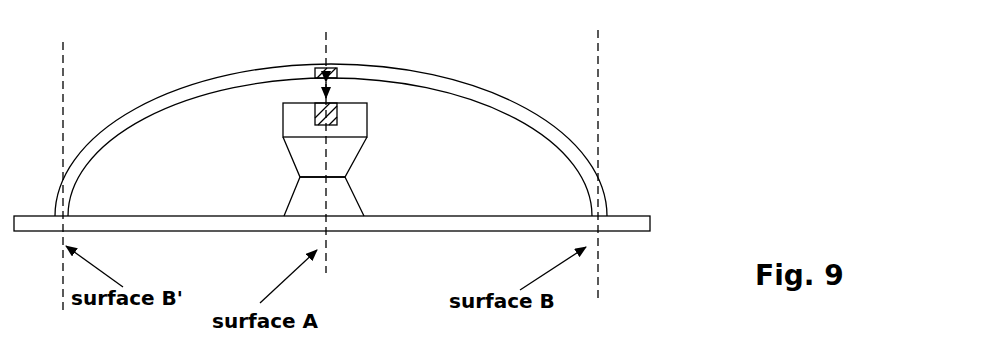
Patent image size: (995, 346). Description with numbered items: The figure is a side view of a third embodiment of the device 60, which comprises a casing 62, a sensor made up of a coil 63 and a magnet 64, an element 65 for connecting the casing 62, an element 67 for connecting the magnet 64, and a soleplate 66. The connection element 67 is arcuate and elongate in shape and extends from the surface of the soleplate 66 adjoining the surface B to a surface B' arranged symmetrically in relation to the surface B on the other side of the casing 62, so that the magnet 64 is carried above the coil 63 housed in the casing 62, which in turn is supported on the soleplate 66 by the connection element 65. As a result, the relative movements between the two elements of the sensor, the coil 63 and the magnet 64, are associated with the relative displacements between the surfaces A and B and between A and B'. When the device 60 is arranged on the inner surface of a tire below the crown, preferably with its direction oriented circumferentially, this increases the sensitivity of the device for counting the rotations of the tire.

The device 60 is at (156, 76).
The casing 62 is at (295, 120).
The coil 63 is at (337, 115).
The magnet 64 is at (332, 69).
The element for connecting the casing 65 is at (303, 155).
The soleplate 66 is at (450, 229).
The element for connecting the magnet 67 is at (458, 93).